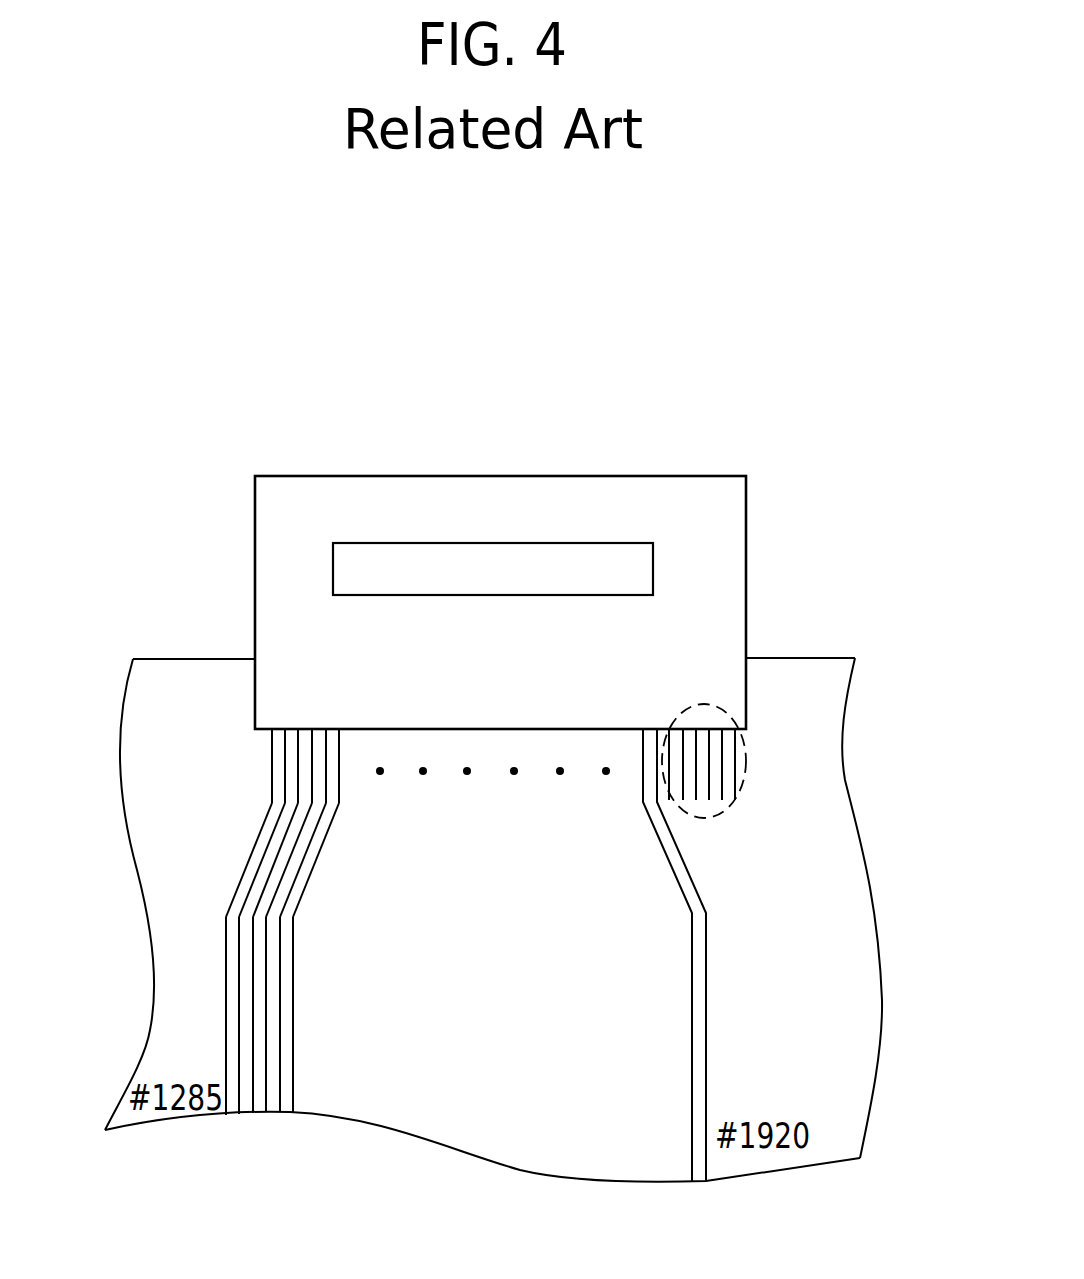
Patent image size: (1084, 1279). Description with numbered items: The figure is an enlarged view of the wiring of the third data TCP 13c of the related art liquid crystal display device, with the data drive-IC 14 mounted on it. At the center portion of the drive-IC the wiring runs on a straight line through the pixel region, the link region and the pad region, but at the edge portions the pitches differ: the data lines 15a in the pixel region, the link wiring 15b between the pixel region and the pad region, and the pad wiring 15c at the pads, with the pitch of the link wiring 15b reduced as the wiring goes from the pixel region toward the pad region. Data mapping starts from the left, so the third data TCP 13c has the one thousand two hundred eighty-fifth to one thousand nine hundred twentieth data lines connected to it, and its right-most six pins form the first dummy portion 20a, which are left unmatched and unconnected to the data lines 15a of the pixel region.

The third data TCP 13c is at (530, 475).
The data drive-IC 14 is at (410, 542).
The data lines 15a is at (233, 1017).
The link wiring 15b is at (248, 853).
The pad wiring 15c is at (272, 768).
The first dummy portion 20a is at (747, 750).